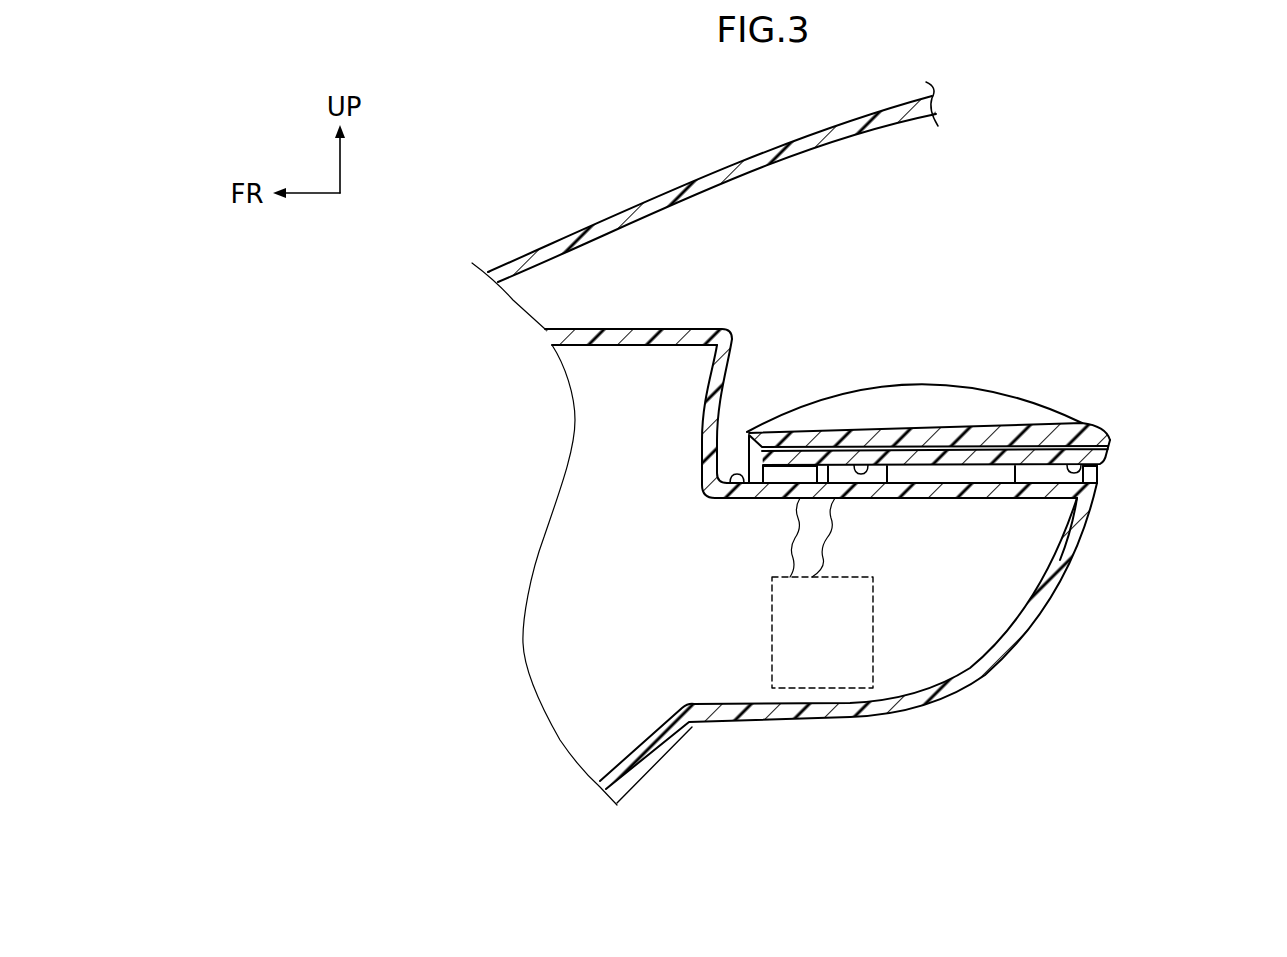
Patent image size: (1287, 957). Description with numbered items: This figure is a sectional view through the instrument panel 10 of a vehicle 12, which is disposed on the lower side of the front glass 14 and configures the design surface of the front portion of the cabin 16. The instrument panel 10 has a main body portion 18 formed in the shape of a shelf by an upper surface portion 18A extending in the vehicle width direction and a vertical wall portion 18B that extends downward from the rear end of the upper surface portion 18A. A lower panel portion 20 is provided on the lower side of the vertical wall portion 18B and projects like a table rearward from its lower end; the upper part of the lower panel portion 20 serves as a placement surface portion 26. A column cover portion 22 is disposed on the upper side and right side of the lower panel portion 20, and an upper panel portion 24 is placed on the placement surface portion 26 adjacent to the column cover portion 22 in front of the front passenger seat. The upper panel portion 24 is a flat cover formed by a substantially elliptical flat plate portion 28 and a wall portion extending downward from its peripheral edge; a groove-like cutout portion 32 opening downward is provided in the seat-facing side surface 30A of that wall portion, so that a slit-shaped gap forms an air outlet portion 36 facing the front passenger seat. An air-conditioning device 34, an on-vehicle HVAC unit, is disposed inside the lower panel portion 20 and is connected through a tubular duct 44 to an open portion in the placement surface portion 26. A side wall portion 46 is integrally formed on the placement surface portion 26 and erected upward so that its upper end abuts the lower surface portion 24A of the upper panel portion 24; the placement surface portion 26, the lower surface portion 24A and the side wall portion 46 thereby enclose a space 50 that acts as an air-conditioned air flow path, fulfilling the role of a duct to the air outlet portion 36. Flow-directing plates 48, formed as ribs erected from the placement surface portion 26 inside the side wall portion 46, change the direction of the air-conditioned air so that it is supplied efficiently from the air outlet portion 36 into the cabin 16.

The instrument panel 10 is at (889, 738).
The vehicle 12 is at (565, 158).
The front glass 14 is at (717, 170).
The cabin 16 is at (1242, 635).
The main body portion 18 is at (688, 322).
The upper surface portion 18A is at (620, 328).
The vertical wall portion 18B is at (725, 367).
The lower panel portion 20 is at (971, 694).
The column cover portion 22 is at (993, 390).
The upper panel portion 24 is at (1120, 409).
The lower surface portion 24A is at (861, 465).
The placement surface portion 26 is at (736, 488).
The flat plate portion 28 is at (914, 428).
The side surface 30A is at (1110, 455).
The cutout portion 32 is at (1083, 425).
The air-conditioning device 34 is at (875, 613).
The air outlet portion 36 is at (1098, 478).
The duct 44 is at (832, 525).
The side wall portion 46 is at (818, 471).
The flow-directing plate 48 is at (980, 484).
The space 50 is at (1074, 553).